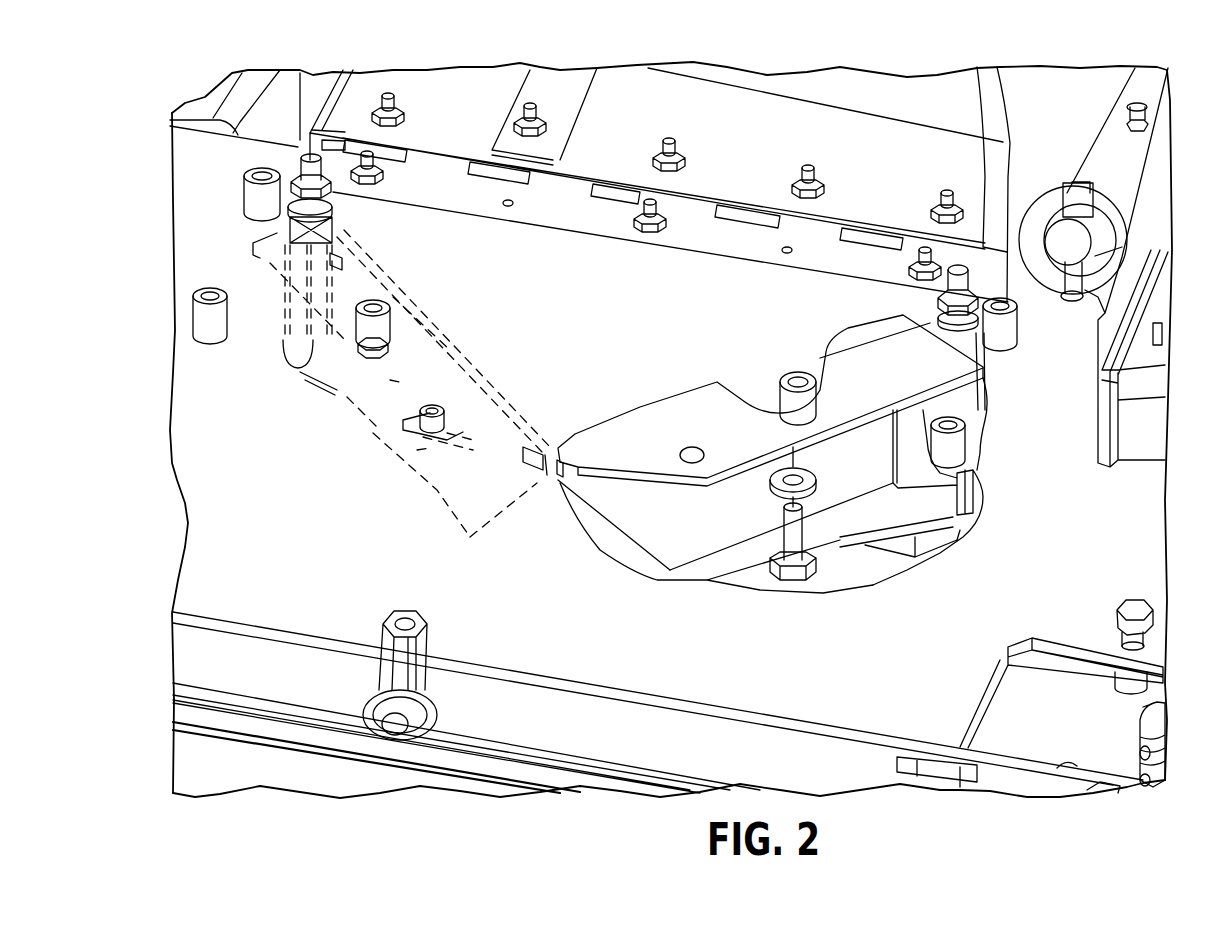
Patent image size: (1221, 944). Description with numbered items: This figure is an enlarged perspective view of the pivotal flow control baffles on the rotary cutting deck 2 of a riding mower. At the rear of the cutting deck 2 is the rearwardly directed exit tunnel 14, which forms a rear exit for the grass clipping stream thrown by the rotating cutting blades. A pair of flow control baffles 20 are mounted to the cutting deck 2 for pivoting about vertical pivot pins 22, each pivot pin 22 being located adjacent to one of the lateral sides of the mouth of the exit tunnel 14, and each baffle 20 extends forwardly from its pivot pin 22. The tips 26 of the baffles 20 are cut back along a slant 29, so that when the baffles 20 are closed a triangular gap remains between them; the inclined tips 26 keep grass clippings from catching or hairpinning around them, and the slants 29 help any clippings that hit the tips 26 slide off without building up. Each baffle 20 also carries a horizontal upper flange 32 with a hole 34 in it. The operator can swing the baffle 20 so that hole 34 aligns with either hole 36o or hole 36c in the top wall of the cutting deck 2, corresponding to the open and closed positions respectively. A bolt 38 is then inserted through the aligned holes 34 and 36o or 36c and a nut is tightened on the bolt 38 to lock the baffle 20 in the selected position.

The rotary cutting deck 2 is at (1107, 547).
The exit tunnel 14 is at (860, 132).
The flow control baffle 20 is at (718, 512).
The pivot pin 22 is at (955, 264).
The tip 26 is at (555, 478).
The slant 29 is at (603, 515).
The horizontal upper flange 32 is at (365, 413).
The baffle hole 34 is at (397, 350).
The hole 36o is at (195, 304).
The hole 36c is at (373, 300).
The bolt 38 is at (787, 540).